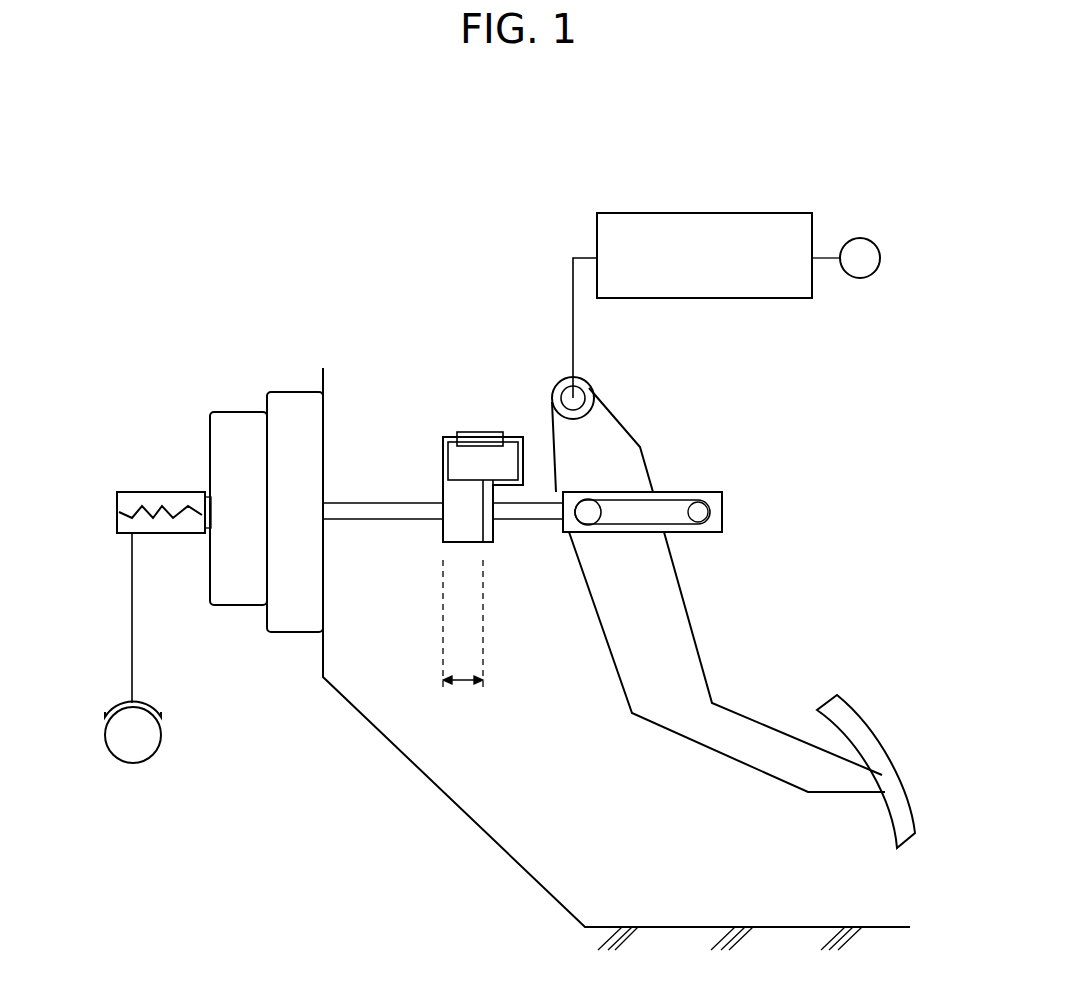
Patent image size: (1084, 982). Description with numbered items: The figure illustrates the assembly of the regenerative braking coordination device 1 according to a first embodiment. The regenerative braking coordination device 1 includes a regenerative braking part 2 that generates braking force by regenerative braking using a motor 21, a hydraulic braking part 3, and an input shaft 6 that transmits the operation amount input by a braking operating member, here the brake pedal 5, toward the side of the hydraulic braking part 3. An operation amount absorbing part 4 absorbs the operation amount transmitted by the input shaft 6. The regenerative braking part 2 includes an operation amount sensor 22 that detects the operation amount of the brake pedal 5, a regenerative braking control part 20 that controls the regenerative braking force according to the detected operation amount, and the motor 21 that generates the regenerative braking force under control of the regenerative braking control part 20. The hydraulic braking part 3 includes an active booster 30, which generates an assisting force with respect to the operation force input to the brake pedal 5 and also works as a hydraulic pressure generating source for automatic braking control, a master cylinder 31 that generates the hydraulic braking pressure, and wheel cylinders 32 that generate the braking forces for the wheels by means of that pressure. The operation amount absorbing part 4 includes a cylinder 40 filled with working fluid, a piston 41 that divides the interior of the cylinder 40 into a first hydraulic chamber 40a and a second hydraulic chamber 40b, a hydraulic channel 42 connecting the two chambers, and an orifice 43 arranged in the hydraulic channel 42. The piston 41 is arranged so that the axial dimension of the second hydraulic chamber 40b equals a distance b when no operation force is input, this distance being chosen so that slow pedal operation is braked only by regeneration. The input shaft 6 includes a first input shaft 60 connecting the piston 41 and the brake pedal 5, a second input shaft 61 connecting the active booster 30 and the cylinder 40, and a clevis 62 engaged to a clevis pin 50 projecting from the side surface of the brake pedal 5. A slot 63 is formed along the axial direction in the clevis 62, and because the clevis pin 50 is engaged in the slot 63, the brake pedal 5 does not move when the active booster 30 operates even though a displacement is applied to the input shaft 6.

The regenerative braking coordination device 1 is at (467, 318).
The regenerative braking part 2 is at (747, 207).
The hydraulic braking part 3 is at (175, 614).
The operation amount absorbing part 4 is at (452, 503).
The brake pedal 5 is at (645, 452).
The input shaft 6 is at (696, 524).
The regenerative braking control part 20 is at (612, 212).
The motor 21 is at (865, 237).
The operation amount sensor 22 is at (585, 395).
The active booster 30 is at (296, 392).
The master cylinder 31 is at (141, 490).
The wheel cylinders 32 is at (128, 765).
The cylinder 40 is at (457, 520).
The first hydraulic chamber 40a is at (500, 538).
The second hydraulic chamber 40b is at (443, 532).
The piston 41 is at (481, 526).
The hydraulic channel 42 is at (450, 432).
The orifice 43 is at (494, 432).
The clevis pin 50 is at (587, 522).
The first input shaft 60 is at (528, 493).
The second input shaft 61 is at (380, 500).
The clevis 62 is at (722, 515).
The slot 63 is at (688, 520).